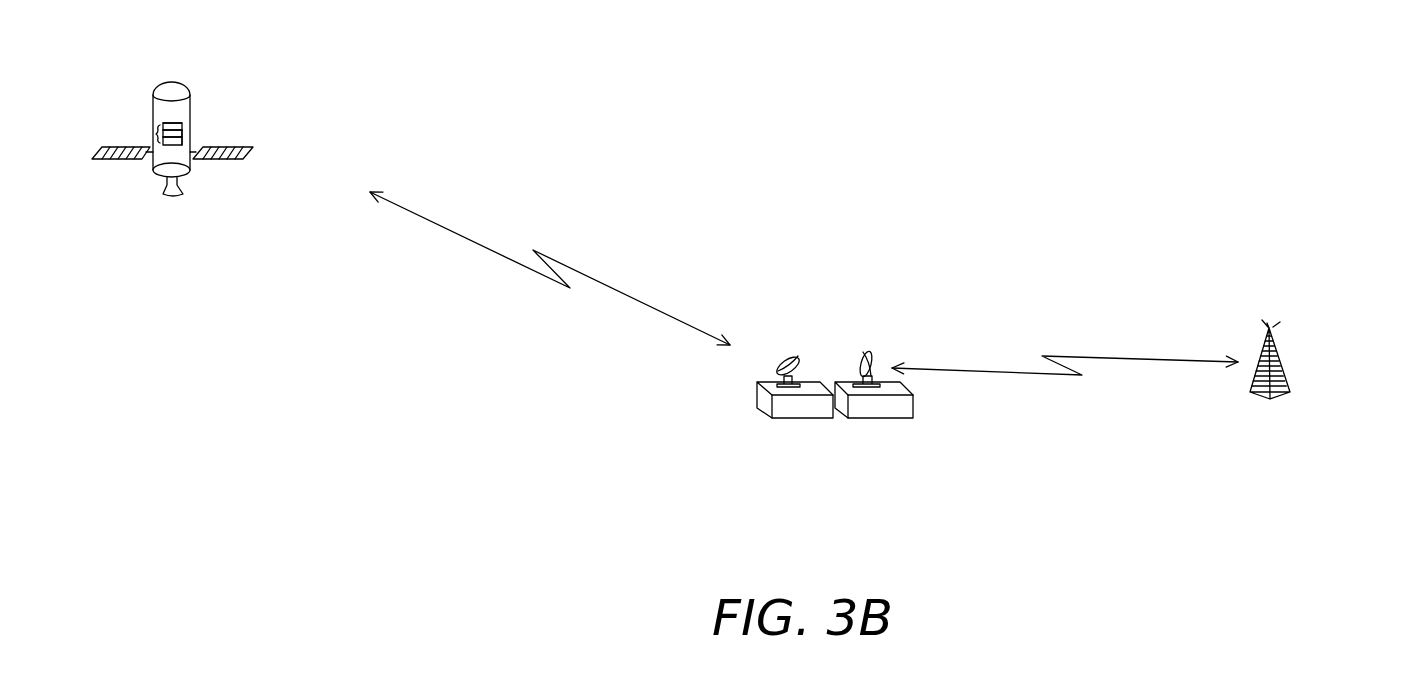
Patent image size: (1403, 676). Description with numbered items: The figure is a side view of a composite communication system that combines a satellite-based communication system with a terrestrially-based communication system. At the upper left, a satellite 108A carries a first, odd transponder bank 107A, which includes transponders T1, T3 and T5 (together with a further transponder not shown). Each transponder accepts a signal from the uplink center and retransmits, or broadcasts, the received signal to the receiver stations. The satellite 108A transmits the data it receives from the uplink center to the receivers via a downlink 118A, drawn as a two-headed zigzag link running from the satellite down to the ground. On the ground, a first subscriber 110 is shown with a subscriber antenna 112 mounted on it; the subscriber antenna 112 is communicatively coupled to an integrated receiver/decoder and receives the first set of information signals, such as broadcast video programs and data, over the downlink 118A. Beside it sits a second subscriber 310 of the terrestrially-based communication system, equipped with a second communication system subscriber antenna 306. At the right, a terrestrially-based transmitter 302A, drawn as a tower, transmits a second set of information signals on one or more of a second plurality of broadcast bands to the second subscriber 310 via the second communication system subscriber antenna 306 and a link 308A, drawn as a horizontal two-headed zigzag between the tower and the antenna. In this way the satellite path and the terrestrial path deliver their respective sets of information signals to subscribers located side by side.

The first (odd) transponder bank 107A is at (148, 137).
The transponder T1 is at (190, 125).
The transponder T3 is at (183, 134).
The transponder T5 is at (182, 141).
The satellite 108A is at (198, 163).
The downlink 118A is at (637, 298).
The subscriber 110 is at (797, 420).
The subscriber antenna 112 is at (782, 363).
The second communication system subscriber antenna 306 is at (873, 363).
The second subscriber 310 is at (865, 420).
The link 308A is at (1087, 357).
The terrestrially-based transmitter 302A is at (1281, 356).